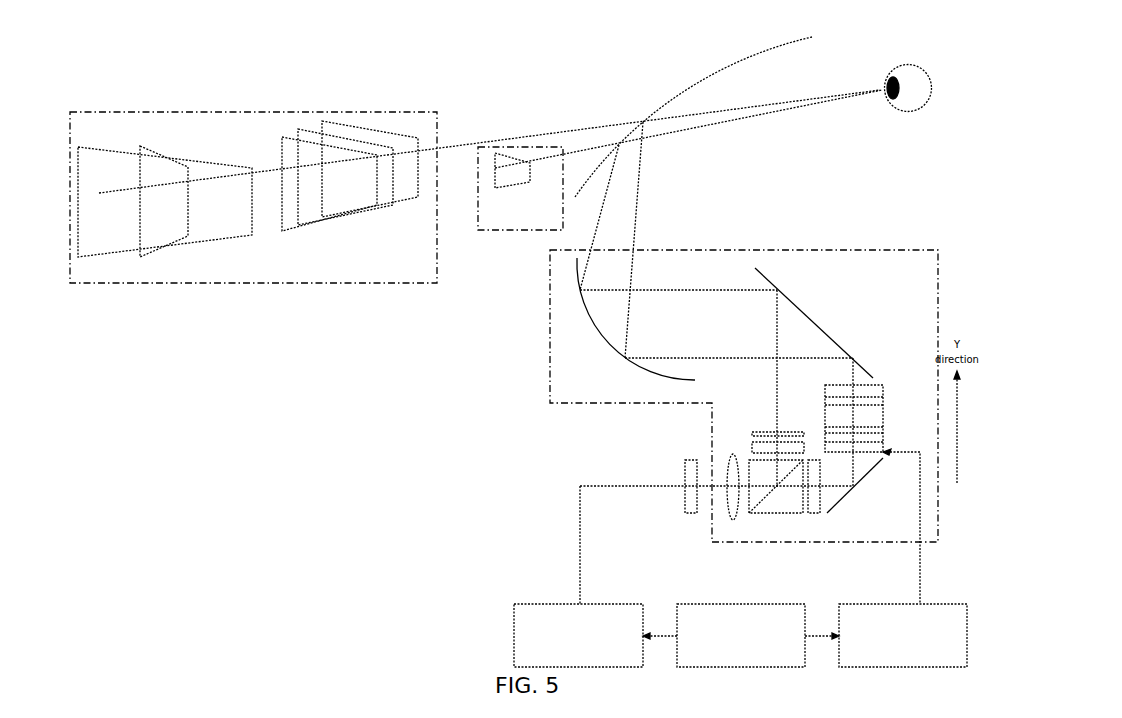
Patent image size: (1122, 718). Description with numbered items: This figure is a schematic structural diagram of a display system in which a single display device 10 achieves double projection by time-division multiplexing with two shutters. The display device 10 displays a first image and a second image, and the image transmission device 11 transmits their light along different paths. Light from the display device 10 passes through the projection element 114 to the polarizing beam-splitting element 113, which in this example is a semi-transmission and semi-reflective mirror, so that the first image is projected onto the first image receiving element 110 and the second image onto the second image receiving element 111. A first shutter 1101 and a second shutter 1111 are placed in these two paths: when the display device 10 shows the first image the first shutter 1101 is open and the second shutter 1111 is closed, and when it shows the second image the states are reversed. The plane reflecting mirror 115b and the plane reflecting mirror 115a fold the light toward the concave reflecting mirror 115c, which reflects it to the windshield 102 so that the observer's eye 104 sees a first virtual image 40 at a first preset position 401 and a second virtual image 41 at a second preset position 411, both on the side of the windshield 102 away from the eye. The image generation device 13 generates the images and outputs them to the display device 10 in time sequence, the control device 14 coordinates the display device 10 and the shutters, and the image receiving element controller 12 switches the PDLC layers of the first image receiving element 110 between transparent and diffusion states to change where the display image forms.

The first preset position 401 is at (253, 180).
The first virtual image 40 is at (248, 200).
The second preset position 411 is at (520, 209).
The second virtual image 41 is at (521, 189).
The windshield 102 is at (693, 116).
The observer's eye 104 is at (900, 75).
The image transmission device 11 is at (722, 396).
The concave reflecting mirror 115c is at (626, 319).
The plane reflecting mirror 115a is at (814, 323).
The first image receiving element 110 is at (877, 418).
The second image receiving element 111 is at (767, 420).
The second shutter 1111 is at (738, 440).
The display device 10 is at (668, 479).
The projection element 114 is at (709, 496).
The polarizing beam-splitting element 113 is at (776, 501).
The first shutter 1101 is at (839, 499).
The plane reflecting mirror 115b is at (865, 485).
The image generation device 13 is at (578, 635).
The control device 14 is at (741, 635).
The image receiving element controller 12 is at (903, 635).